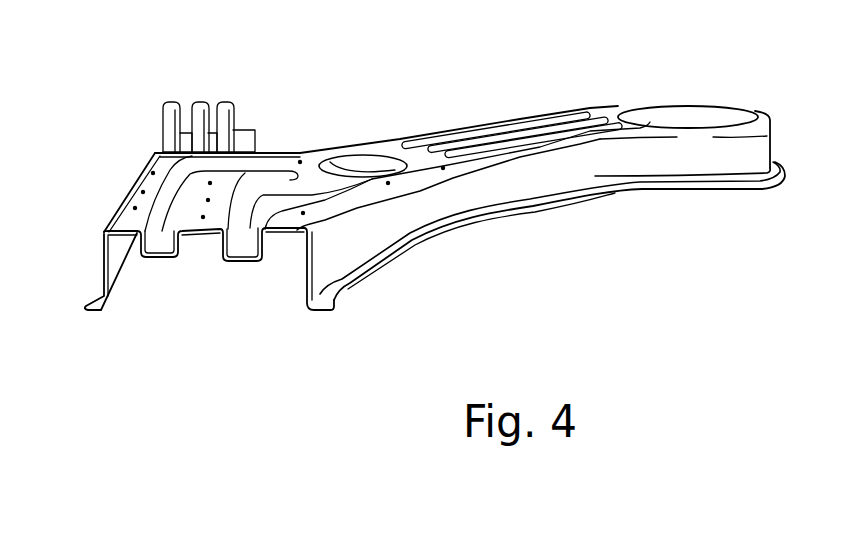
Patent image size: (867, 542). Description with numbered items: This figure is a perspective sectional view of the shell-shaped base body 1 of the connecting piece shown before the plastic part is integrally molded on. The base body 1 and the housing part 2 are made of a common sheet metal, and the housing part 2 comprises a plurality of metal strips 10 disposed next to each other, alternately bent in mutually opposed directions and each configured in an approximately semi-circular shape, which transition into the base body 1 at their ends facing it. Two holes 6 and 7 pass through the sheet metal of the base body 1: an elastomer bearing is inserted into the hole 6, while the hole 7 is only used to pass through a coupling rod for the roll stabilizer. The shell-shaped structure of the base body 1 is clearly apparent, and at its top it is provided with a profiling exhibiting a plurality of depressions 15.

The base body 1 is at (567, 178).
The housing part 2 is at (163, 122).
The hole 6 is at (683, 106).
The hole 7 is at (362, 158).
The metal strips 10 is at (198, 100).
The depressions 15 is at (160, 261).